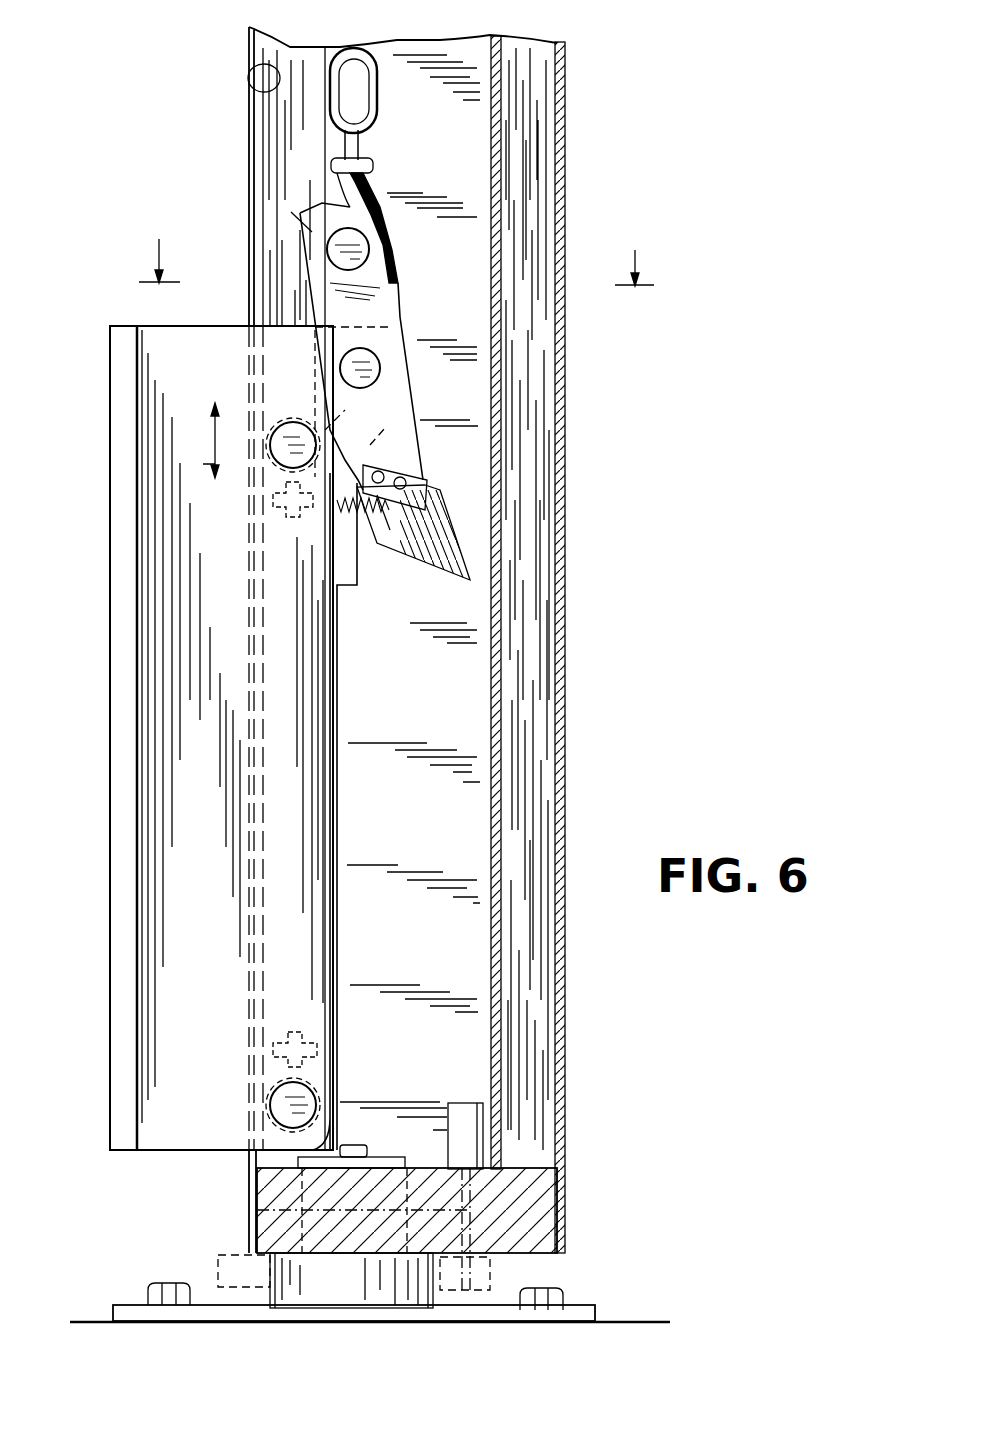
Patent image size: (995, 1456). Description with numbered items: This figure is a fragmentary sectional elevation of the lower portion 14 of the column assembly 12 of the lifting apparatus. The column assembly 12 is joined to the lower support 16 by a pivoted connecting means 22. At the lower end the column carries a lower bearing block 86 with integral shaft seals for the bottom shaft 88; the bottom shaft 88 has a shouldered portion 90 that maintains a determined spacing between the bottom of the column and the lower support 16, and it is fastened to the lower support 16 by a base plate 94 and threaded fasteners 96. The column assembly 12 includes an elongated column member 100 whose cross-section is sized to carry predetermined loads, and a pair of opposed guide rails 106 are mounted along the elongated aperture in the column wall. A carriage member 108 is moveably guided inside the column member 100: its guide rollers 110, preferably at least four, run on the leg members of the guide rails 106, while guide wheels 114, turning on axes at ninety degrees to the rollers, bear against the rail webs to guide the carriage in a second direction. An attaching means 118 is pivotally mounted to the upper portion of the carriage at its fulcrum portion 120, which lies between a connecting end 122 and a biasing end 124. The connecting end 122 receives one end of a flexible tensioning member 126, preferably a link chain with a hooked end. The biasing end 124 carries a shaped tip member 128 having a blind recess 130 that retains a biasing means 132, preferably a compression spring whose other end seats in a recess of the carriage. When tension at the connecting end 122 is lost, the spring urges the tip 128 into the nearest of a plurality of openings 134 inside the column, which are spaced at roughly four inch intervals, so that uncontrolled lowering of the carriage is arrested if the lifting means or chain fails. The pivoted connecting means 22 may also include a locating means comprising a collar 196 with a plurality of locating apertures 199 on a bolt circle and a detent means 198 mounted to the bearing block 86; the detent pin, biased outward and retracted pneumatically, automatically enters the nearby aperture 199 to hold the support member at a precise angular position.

The column assembly 12 is at (660, 710).
The lower portion of the column assembly 14 is at (721, 1173).
The lower support 16 is at (645, 1322).
The pivoted connecting means 22 is at (593, 1165).
The lower bearing block 86 is at (270, 1190).
The bottom shaft 88 is at (300, 1226).
The shouldered portion 90 is at (218, 1262).
The base plate 94 is at (318, 1304).
The threaded fasteners 96 is at (150, 1285).
The elongated column member 100 is at (565, 795).
The guide rails 106 is at (250, 70).
The carriage member 108 is at (330, 710).
The guide rollers 110 is at (283, 428).
The guide wheels 114 is at (282, 487).
The attaching means 118 is at (434, 423).
The fulcrum portion 120 is at (396, 368).
The connecting end 122 is at (404, 238).
The biasing end 124 is at (443, 493).
The flexible tensioning member 126 is at (349, 70).
The shaped tip member 128 is at (462, 557).
The blind recess 130 is at (410, 556).
The biasing means 132 is at (377, 543).
The openings 134 is at (503, 452).
The collar 196 is at (490, 1273).
The detent means 198 is at (470, 1220).
The locating apertures 199 is at (468, 1288).